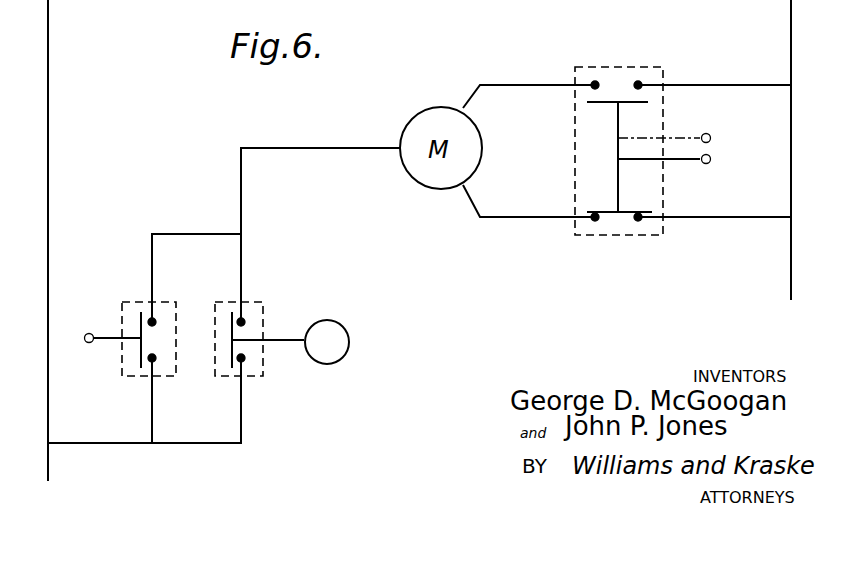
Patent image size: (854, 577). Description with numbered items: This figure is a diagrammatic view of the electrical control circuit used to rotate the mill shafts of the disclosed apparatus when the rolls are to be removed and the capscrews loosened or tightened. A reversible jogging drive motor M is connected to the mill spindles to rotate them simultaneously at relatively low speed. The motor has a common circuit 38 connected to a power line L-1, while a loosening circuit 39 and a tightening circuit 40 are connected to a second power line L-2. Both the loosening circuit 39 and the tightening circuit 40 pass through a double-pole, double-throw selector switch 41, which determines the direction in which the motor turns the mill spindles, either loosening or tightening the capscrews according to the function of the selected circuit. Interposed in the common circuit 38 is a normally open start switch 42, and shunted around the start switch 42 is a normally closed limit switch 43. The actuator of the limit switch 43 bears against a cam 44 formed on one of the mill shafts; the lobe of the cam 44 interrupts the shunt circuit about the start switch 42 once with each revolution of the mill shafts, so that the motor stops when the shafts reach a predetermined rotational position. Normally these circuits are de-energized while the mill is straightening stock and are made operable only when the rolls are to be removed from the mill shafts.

The power line L-1 is at (52, 56).
The power line L-2 is at (787, 50).
The common circuit 38 is at (317, 147).
The loosening circuit 39 is at (502, 84).
The tightening circuit 40 is at (530, 219).
The double-pole, double-throw selector switch 41 is at (627, 240).
The start switch 42 is at (128, 300).
The limit switch 43 is at (259, 300).
The cam 44 is at (353, 335).